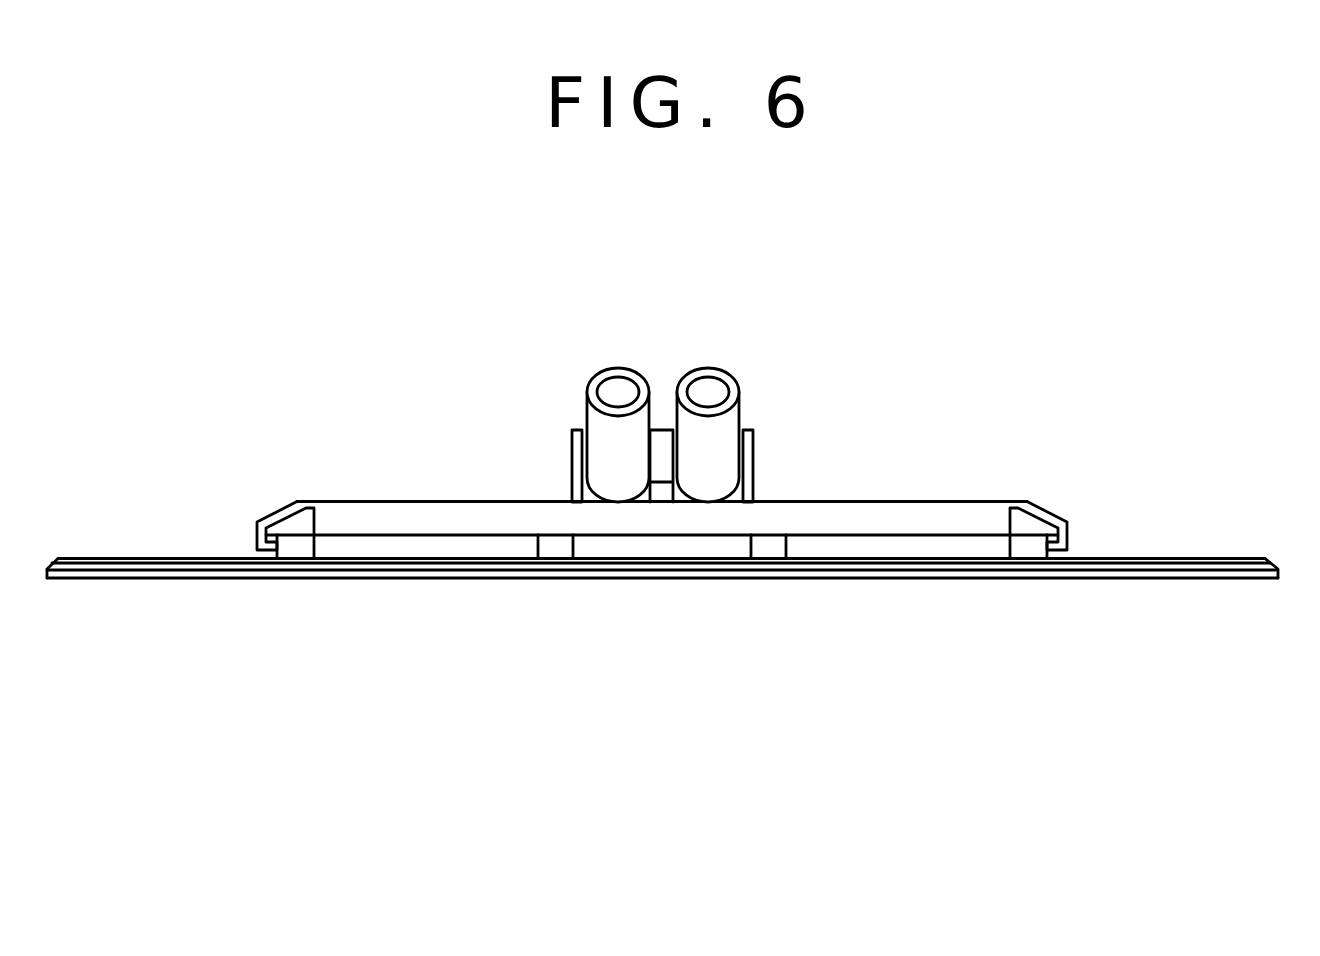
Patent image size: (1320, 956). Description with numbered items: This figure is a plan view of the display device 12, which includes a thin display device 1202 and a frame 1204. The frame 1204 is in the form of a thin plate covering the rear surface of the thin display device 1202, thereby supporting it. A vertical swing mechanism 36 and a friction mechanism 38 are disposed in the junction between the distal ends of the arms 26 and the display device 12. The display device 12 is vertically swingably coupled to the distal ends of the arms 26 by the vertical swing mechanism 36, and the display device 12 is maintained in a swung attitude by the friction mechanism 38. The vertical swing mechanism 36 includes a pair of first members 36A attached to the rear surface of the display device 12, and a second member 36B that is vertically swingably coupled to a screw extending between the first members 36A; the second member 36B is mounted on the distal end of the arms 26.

The display device 12 is at (676, 603).
The thin display device 1202 is at (872, 580).
The frame 1204 is at (1227, 560).
The arms 26 is at (698, 368).
The vertical swing mechanism 36 is at (665, 471).
The friction mechanism 38 is at (665, 471).
The first members 36A is at (572, 457).
The second member 36B is at (663, 467).